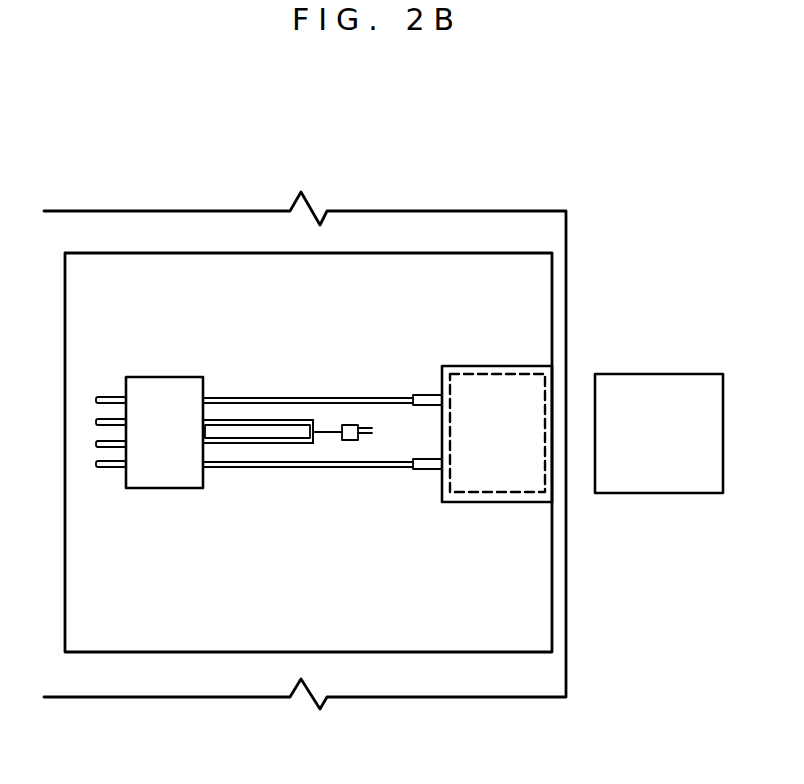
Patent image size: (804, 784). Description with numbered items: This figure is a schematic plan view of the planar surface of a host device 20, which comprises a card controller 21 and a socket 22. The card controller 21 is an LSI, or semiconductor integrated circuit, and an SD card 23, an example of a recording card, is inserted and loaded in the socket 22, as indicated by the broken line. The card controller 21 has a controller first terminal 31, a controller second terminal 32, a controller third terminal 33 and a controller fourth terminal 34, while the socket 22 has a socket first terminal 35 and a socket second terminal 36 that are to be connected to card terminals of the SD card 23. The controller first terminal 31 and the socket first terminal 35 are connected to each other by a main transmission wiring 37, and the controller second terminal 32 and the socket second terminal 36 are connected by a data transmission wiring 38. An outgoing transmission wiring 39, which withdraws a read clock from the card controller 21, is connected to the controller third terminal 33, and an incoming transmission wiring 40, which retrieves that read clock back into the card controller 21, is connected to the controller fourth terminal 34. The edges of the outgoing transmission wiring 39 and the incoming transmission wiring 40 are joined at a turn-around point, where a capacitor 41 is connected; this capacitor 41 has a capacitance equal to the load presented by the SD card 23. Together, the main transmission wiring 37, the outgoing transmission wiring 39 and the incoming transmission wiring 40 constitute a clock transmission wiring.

The host device 20 is at (390, 211).
The card controller 21 is at (157, 377).
The socket 22 is at (482, 366).
The SD card 23 is at (532, 413).
The controller first terminal 31 is at (216, 398).
The controller second terminal 32 is at (215, 467).
The controller third terminal 33 is at (230, 420).
The controller fourth terminal 34 is at (222, 444).
The socket first terminal 35 is at (423, 395).
The socket second terminal 36 is at (423, 470).
The main transmission wiring 37 is at (355, 398).
The data transmission wiring 38 is at (360, 468).
The outgoing transmission wiring 39 is at (290, 420).
The incoming transmission wiring 40 is at (277, 444).
The capacitor 41 is at (358, 424).